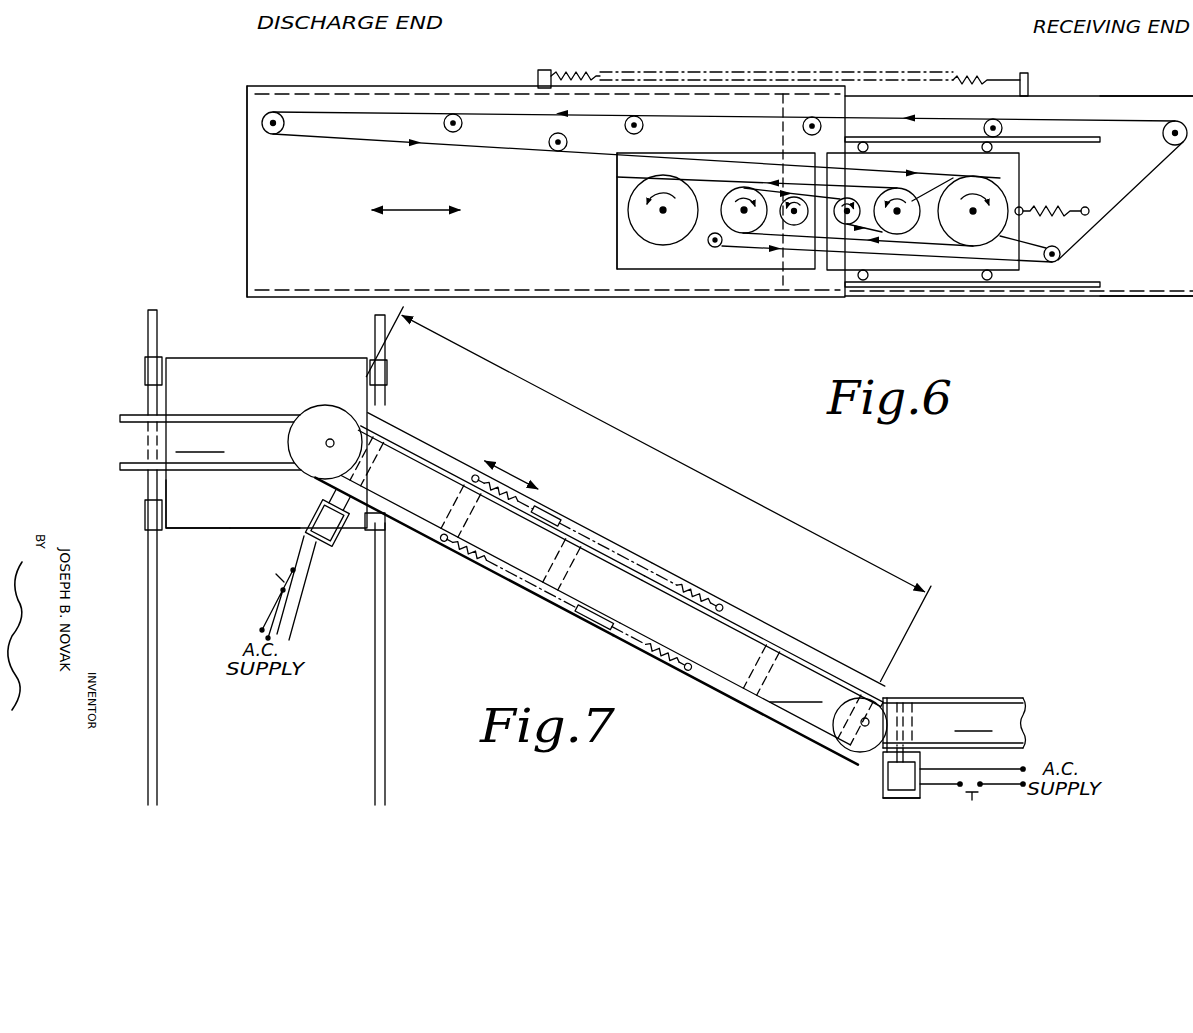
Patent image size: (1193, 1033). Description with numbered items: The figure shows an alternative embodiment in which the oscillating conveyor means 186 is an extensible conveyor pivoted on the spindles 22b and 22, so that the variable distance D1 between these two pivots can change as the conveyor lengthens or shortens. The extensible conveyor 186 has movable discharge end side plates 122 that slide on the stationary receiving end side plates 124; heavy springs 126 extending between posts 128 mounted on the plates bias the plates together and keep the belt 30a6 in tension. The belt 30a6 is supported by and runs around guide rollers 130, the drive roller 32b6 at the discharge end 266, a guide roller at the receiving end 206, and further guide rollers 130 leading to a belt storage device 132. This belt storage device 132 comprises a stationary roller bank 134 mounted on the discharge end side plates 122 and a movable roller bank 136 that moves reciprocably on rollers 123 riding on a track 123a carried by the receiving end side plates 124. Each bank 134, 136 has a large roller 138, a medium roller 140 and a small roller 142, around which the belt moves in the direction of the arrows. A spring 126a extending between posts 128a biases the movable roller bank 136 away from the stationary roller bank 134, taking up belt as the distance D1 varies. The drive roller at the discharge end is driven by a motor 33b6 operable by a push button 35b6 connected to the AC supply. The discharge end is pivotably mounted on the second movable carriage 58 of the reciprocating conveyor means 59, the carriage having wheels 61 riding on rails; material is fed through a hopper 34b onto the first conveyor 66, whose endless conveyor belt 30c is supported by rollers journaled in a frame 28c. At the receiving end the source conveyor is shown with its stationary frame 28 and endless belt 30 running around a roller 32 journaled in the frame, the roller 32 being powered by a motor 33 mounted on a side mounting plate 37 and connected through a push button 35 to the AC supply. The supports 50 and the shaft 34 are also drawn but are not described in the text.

In FIG. 6, the oscillating conveyor means 186 is at (720, 148).
In FIG. 7, the oscillating conveyor means 186 is at (617, 536).
In FIG. 6, the discharge end 266 is at (352, 47).
In FIG. 7, the discharge end 266 is at (304, 321).
In FIG. 6, the receiving end 206 is at (1141, 93).
In FIG. 7, the receiving end 206 is at (870, 676).
In FIG. 6, the movable discharge end side plates 122 is at (460, 60).
In FIG. 7, the movable discharge end side plates 122 is at (456, 436).
In FIG. 6, the stationary receiving end side plates 124 is at (1053, 96).
In FIG. 7, the stationary receiving end side plates 124 is at (800, 632).
In FIG. 6, the heavy springs 126 is at (822, 76).
In FIG. 7, the heavy springs 126 is at (545, 511).
In FIG. 6, the posts 128 is at (546, 70).
In FIG. 7, the posts 128 is at (444, 533).
In FIG. 6, the guide rollers 130 is at (555, 135).
In FIG. 6, the belt 30a6 is at (681, 118).
In FIG. 7, the belt 30a6 is at (796, 690).
In FIG. 6, the drive roller 32b6 is at (272, 134).
In FIG. 7, the drive roller 32b6 is at (378, 460).
In FIG. 6, the belt storage device 132 is at (614, 183).
In FIG. 6, the stationary roller bank 134 is at (674, 265).
In FIG. 6, the movable roller bank 136 is at (963, 265).
In FIG. 6, the large roller 138 is at (632, 222).
In FIG. 6, the medium roller 140 is at (741, 233).
In FIG. 6, the small roller 142 is at (847, 225).
In FIG. 6, the rollers 123 is at (985, 153).
In FIG. 6, the track 123a is at (1095, 143).
In FIG. 6, the posts 128a is at (1092, 179).
In FIG. 6, the spring 126a is at (1038, 210).
In FIG. 7, the wheels 61 is at (145, 515).
In FIG. 7, the first conveyor 66 is at (224, 373).
In FIG. 7, the spindle 22b is at (322, 428).
In FIG. 7, the endless conveyor belt 30c is at (200, 441).
In FIG. 7, the hopper 34b is at (300, 444).
In FIG. 7, the frame 28c is at (185, 469).
In FIG. 7, the second movable carriage 58 is at (192, 514).
In FIG. 7, the reciprocating conveyor means 59 is at (245, 531).
In FIG. 7, the push button 35b6 is at (278, 580).
In FIG. 7, the motor 33b6 is at (334, 548).
In FIG. 7, the support posts 50 is at (158, 749).
In FIG. 7, the variable distance D1 is at (648, 530).
In FIG. 7, the spindle 22 is at (838, 743).
In FIG. 7, the drum shaft 34 is at (833, 716).
In FIG. 7, the motor 33 is at (888, 775).
In FIG. 7, the side mounting plate 37 is at (884, 797).
In FIG. 7, the push button 35 is at (973, 800).
In FIG. 7, the roller 32 is at (910, 712).
In FIG. 7, the stationary frame 28 is at (1013, 698).
In FIG. 7, the endless belt 30 is at (973, 721).